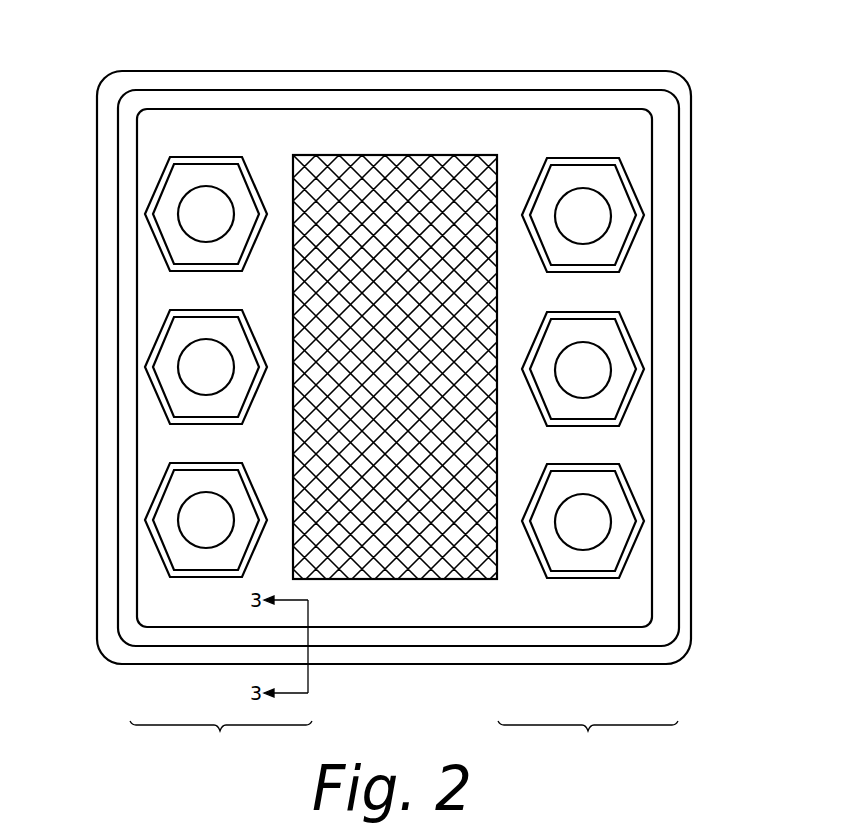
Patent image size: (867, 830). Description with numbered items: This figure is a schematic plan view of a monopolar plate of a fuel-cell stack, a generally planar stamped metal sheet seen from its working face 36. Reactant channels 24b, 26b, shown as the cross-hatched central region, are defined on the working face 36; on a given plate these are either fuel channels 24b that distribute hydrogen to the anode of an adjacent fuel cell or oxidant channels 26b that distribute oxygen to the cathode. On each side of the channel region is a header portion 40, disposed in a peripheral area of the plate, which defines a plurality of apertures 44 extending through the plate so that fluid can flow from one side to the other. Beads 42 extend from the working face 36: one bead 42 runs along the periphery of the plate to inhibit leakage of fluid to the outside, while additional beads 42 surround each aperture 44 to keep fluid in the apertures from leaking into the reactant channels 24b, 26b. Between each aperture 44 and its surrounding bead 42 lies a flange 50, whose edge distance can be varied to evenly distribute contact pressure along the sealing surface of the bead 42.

The bead 42 is at (131, 101).
The aperture 44 is at (205, 203).
The flange 50 is at (620, 209).
The working face 36 is at (386, 613).
The fuel channels 24b is at (395, 293).
The oxidant channels 26b is at (357, 190).
The header portion 40 is at (404, 741).